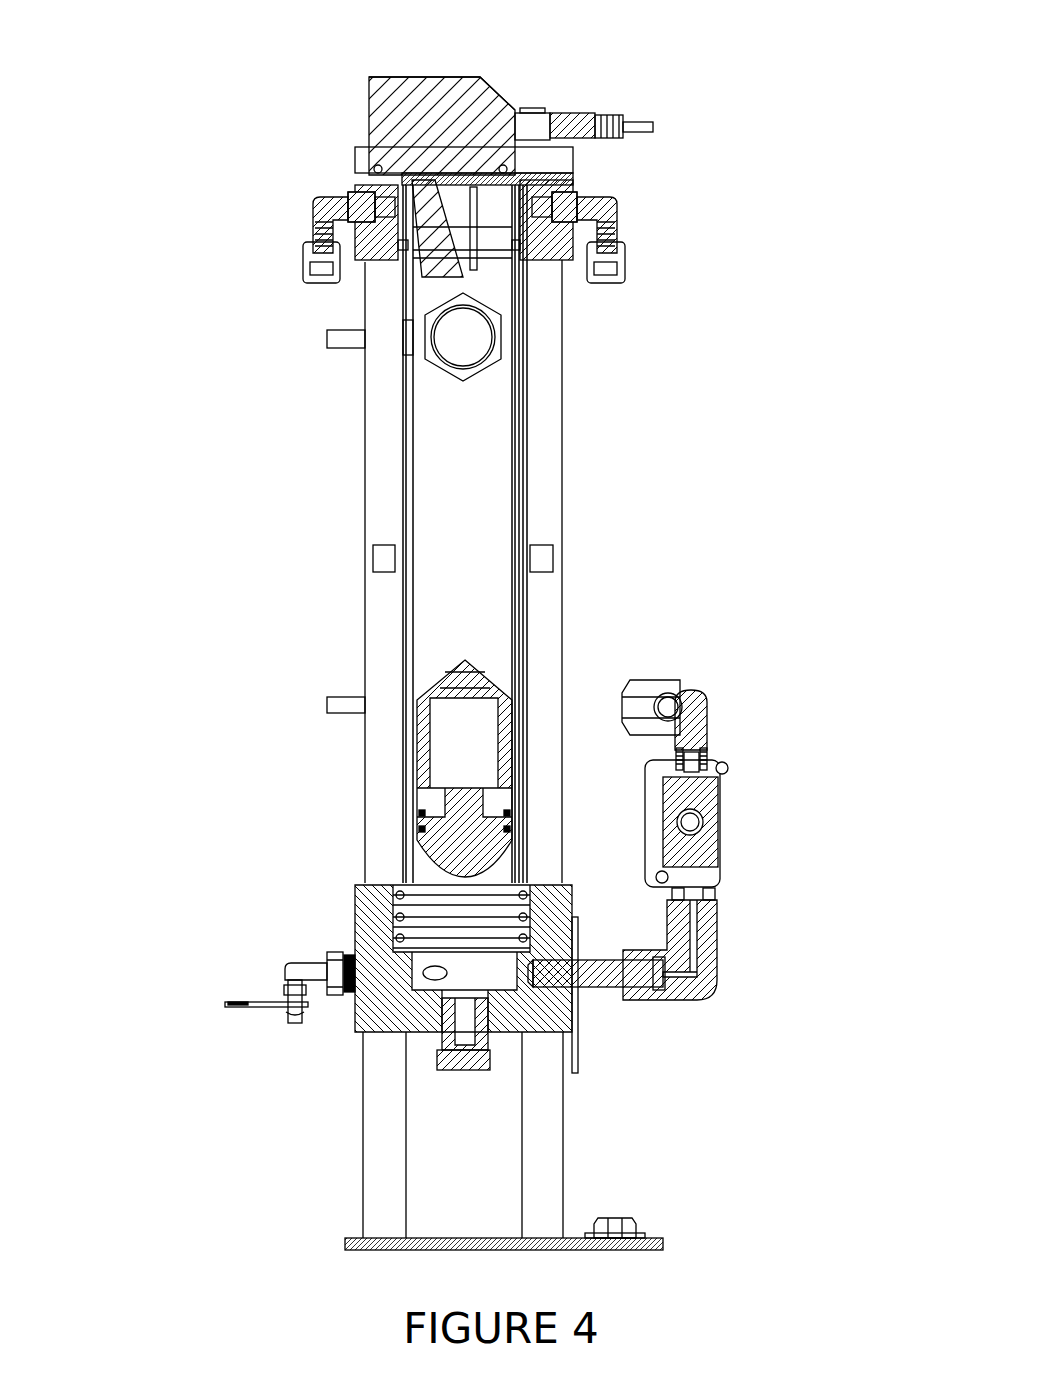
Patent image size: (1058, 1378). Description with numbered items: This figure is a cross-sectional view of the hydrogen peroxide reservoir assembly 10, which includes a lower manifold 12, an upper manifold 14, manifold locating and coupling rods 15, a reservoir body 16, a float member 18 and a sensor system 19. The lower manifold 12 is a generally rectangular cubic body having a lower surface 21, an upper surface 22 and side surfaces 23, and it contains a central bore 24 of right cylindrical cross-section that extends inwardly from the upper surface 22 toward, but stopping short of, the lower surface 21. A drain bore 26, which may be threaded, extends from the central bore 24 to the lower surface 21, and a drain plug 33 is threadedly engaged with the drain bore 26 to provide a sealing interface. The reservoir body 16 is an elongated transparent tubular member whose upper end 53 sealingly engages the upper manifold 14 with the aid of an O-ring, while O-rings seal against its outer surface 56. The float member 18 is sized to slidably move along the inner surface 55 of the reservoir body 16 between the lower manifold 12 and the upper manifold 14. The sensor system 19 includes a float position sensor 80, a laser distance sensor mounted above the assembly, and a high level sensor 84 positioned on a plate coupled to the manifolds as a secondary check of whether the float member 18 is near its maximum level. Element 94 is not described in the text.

The hydrogen peroxide reservoir assembly 10 is at (270, 497).
The lower manifold 12 is at (314, 919).
The upper manifold 14 is at (588, 176).
The manifold locating and coupling rods 15 is at (352, 452).
The reservoir body 16 is at (392, 400).
The float member 18 is at (407, 755).
The sensor system 19 is at (428, 62).
The lower surface 21 is at (378, 1035).
The upper surface 22 is at (360, 885).
The side surfaces 23 is at (340, 1033).
The central bore 24 is at (543, 917).
The drain bore 26 is at (503, 1013).
The drain plug 33 is at (465, 1072).
The upper end 53 is at (585, 250).
The inner surface 55 is at (512, 410).
The outer surface 56 is at (517, 455).
The float position sensor 80 is at (354, 112).
The high level sensor 84 is at (394, 330).
The bolt 94 is at (570, 970).